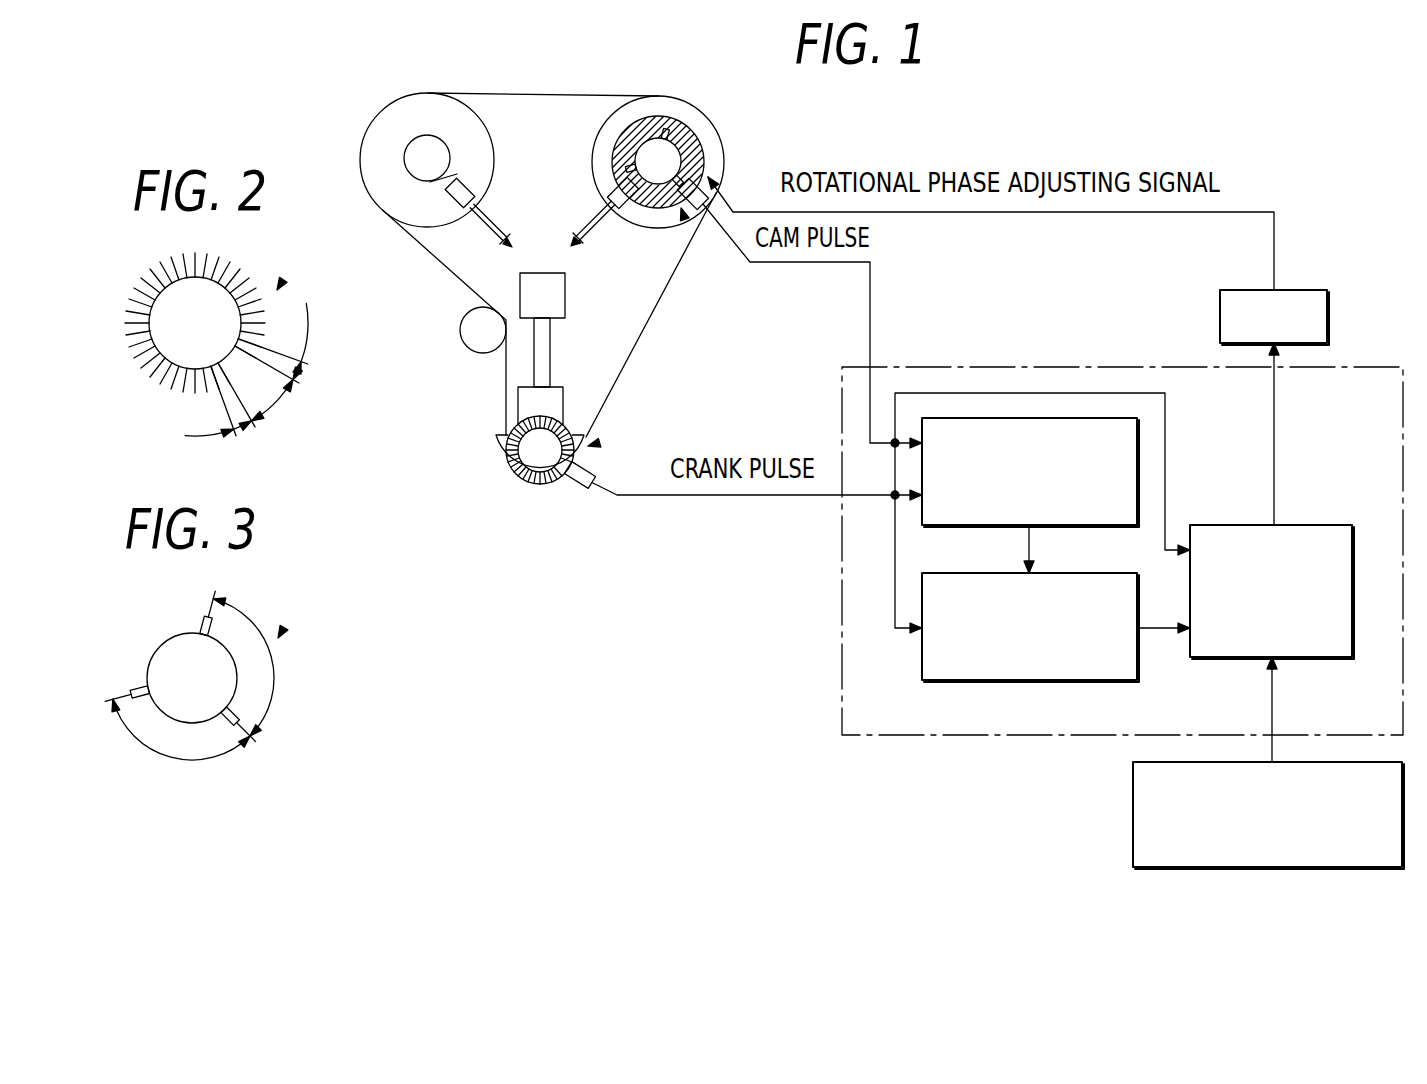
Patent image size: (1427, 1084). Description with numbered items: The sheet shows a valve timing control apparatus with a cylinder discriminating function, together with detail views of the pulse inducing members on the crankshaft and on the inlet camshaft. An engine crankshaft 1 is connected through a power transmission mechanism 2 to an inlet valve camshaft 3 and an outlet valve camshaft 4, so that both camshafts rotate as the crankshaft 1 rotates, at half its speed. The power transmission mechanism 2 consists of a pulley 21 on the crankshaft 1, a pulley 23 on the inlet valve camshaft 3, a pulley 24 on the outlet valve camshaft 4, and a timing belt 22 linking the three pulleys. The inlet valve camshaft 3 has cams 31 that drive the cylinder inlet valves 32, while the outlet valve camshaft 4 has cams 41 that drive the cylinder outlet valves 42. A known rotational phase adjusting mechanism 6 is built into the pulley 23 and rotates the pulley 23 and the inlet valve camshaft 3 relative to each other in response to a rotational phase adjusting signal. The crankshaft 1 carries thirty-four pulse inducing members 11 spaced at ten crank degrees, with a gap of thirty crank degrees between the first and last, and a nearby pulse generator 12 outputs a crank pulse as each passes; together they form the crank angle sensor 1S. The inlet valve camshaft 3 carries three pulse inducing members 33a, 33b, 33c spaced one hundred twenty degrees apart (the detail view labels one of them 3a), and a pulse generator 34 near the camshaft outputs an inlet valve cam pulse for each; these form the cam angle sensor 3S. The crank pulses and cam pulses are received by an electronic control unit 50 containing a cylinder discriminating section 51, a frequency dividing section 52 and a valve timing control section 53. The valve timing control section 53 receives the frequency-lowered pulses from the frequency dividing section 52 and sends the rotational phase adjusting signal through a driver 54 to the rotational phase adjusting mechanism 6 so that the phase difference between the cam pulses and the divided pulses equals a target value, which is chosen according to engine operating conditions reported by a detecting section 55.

In FIG. 1, the engine crankshaft 1 is at (532, 460).
In FIG. 2, the engine crankshaft 1 is at (202, 288).
In FIG. 1, the crank angle sensor 1S is at (596, 444).
In FIG. 2, the crank angle sensor 1S is at (283, 280).
In FIG. 1, the power transmission mechanism 2 is at (445, 306).
In FIG. 1, the inlet valve camshaft 3 is at (648, 150).
In FIG. 3, the inlet valve camshaft 3 is at (158, 663).
In FIG. 1, the cam angle sensor 3S is at (683, 212).
In FIG. 3, the cam angle sensor 3S is at (284, 628).
In FIG. 3, the projection 3a is at (240, 718).
In FIG. 1, the outlet valve camshaft 4 is at (428, 145).
In FIG. 1, the rotational phase adjusting mechanism 6 is at (688, 140).
In FIG. 2, the pulse inducing members 11 is at (126, 325).
In FIG. 1, the pulse generator 12 is at (583, 489).
In FIG. 1, the pulley 21 is at (562, 484).
In FIG. 1, the timing belt 22 is at (650, 327).
In FIG. 1, the pulley 23 is at (722, 136).
In FIG. 1, the pulley 24 is at (383, 118).
In FIG. 1, the cams 31 is at (628, 212).
In FIG. 1, the cylinder inlet valves 32 is at (582, 258).
In FIG. 1, the pulse inducing member 33a is at (700, 178).
In FIG. 1, the pulse inducing member 33b is at (665, 130).
In FIG. 3, the pulse inducing member 33b is at (204, 618).
In FIG. 1, the pulse inducing member 33c is at (628, 168).
In FIG. 3, the pulse inducing member 33c is at (131, 691).
In FIG. 1, the pulse generator 34 is at (708, 198).
In FIG. 1, the cams 41 is at (460, 178).
In FIG. 1, the cylinder outlet valves 42 is at (511, 244).
In FIG. 1, the electronic control unit 50 is at (1362, 364).
In FIG. 1, the cylinder discriminating section 51 is at (958, 528).
In FIG. 1, the frequency dividing section 52 is at (1076, 572).
In FIG. 1, the valve timing control section 53 is at (1306, 524).
In FIG. 1, the driver 54 is at (1292, 289).
In FIG. 1, the detecting section 55 is at (1133, 776).